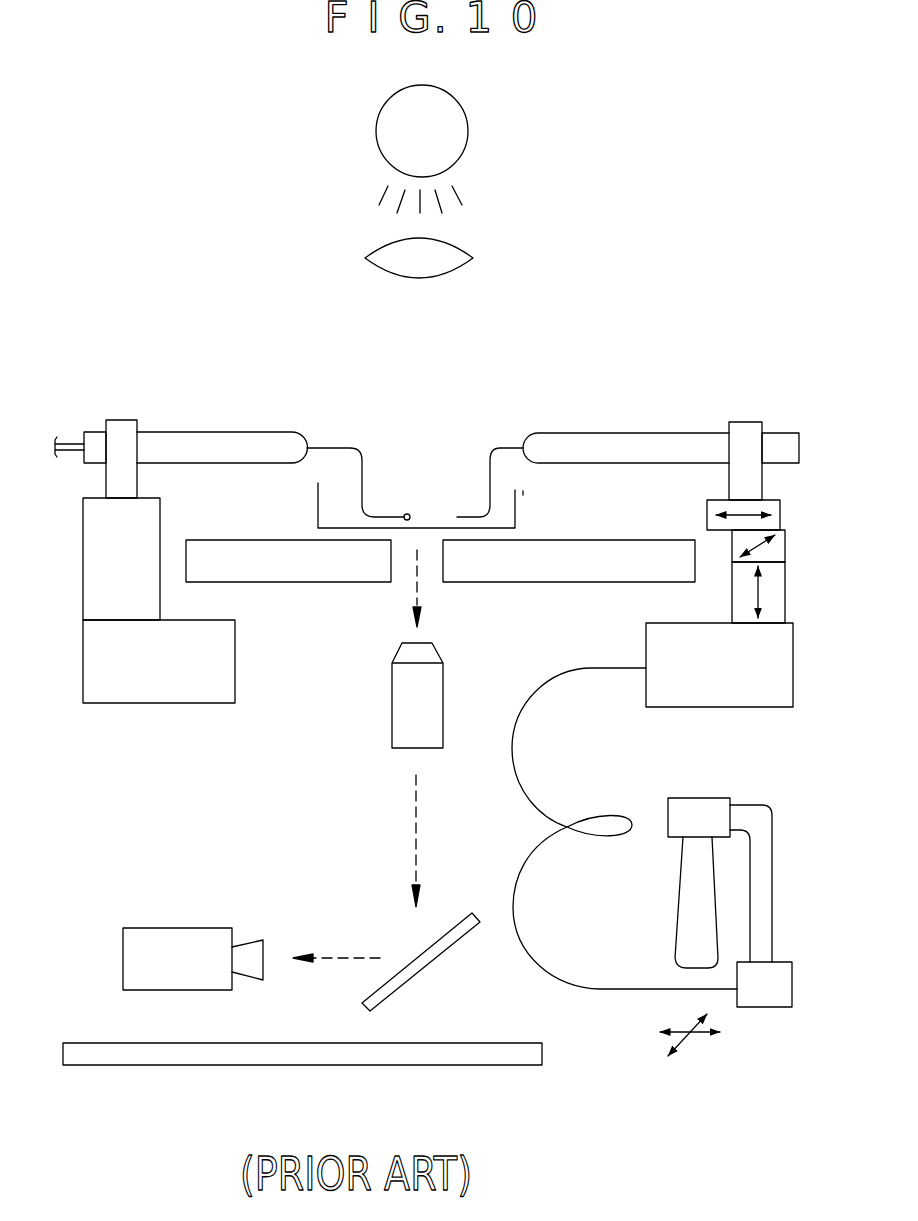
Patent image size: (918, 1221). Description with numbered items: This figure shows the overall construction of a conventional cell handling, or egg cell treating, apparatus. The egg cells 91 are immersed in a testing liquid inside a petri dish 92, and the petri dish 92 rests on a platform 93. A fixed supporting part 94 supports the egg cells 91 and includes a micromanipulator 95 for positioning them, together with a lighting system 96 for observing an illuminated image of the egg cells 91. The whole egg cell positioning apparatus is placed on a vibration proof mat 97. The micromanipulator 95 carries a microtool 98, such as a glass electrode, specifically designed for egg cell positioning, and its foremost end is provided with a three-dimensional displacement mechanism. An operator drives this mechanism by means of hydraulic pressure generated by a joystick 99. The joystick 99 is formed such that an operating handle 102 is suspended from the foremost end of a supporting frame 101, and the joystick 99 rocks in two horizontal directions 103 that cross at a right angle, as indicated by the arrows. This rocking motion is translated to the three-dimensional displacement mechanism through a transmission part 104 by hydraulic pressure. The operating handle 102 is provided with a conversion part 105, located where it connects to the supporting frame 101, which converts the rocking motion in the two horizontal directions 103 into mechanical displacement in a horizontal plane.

The egg cells 91 is at (406, 512).
The petri dish 92 is at (517, 510).
The platform 93 is at (300, 585).
The fixed supporting part 94 is at (150, 408).
The micromanipulator 95 is at (710, 405).
The lighting system 96 is at (383, 280).
The vibration proof mat 97 is at (458, 1045).
The microtool 98 is at (502, 448).
The joystick 99 is at (642, 788).
The supporting frame 101 is at (750, 805).
The operating handle 102 is at (690, 900).
The two horizontal directions 103 is at (690, 1038).
The transmission part 104 is at (757, 1007).
The conversion part 105 is at (698, 798).